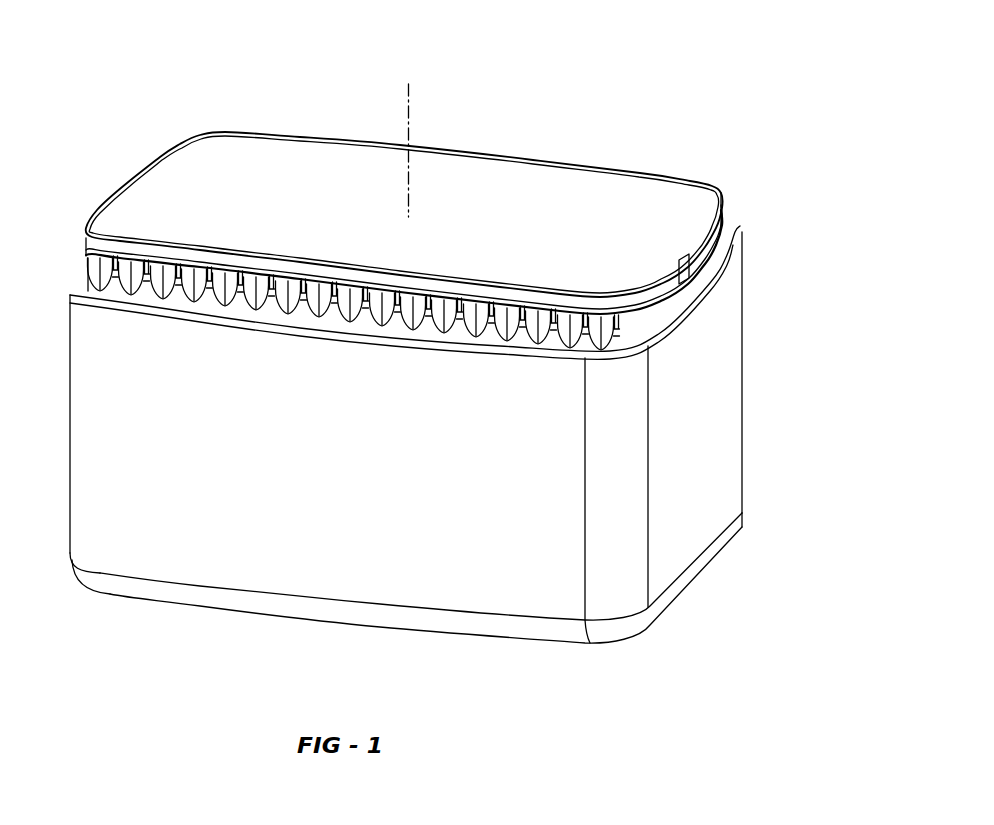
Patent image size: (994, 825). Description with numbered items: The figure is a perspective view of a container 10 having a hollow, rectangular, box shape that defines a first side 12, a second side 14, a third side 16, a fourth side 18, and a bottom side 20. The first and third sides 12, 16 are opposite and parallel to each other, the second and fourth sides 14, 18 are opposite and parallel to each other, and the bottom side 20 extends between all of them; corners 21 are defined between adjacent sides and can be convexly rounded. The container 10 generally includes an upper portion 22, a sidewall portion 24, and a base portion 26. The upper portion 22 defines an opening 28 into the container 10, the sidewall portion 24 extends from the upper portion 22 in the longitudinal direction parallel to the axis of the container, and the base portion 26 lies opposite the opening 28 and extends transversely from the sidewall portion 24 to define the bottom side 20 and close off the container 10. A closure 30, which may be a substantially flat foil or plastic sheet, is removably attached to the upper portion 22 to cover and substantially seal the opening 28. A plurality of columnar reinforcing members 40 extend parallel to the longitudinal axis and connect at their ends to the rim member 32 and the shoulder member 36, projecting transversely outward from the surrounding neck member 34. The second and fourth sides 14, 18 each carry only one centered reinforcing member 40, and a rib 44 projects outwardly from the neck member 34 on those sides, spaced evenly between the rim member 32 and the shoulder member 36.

The container 10 is at (167, 88).
The first side 12 is at (327, 512).
The second side 14 is at (700, 503).
The third side 16 is at (742, 382).
The fourth side 18 is at (70, 463).
The bottom side 20 is at (537, 640).
The corners 21 is at (473, 623).
The upper portion 22 is at (82, 285).
The sidewall portion 24 is at (84, 381).
The base portion 26 is at (96, 580).
The opening 28 is at (177, 255).
The closure 30 is at (547, 197).
The rim member 32 is at (240, 273).
The neck member 34 is at (263, 293).
The shoulder member 36 is at (318, 322).
The reinforcing members 40 is at (502, 320).
The rib 44 is at (650, 297).